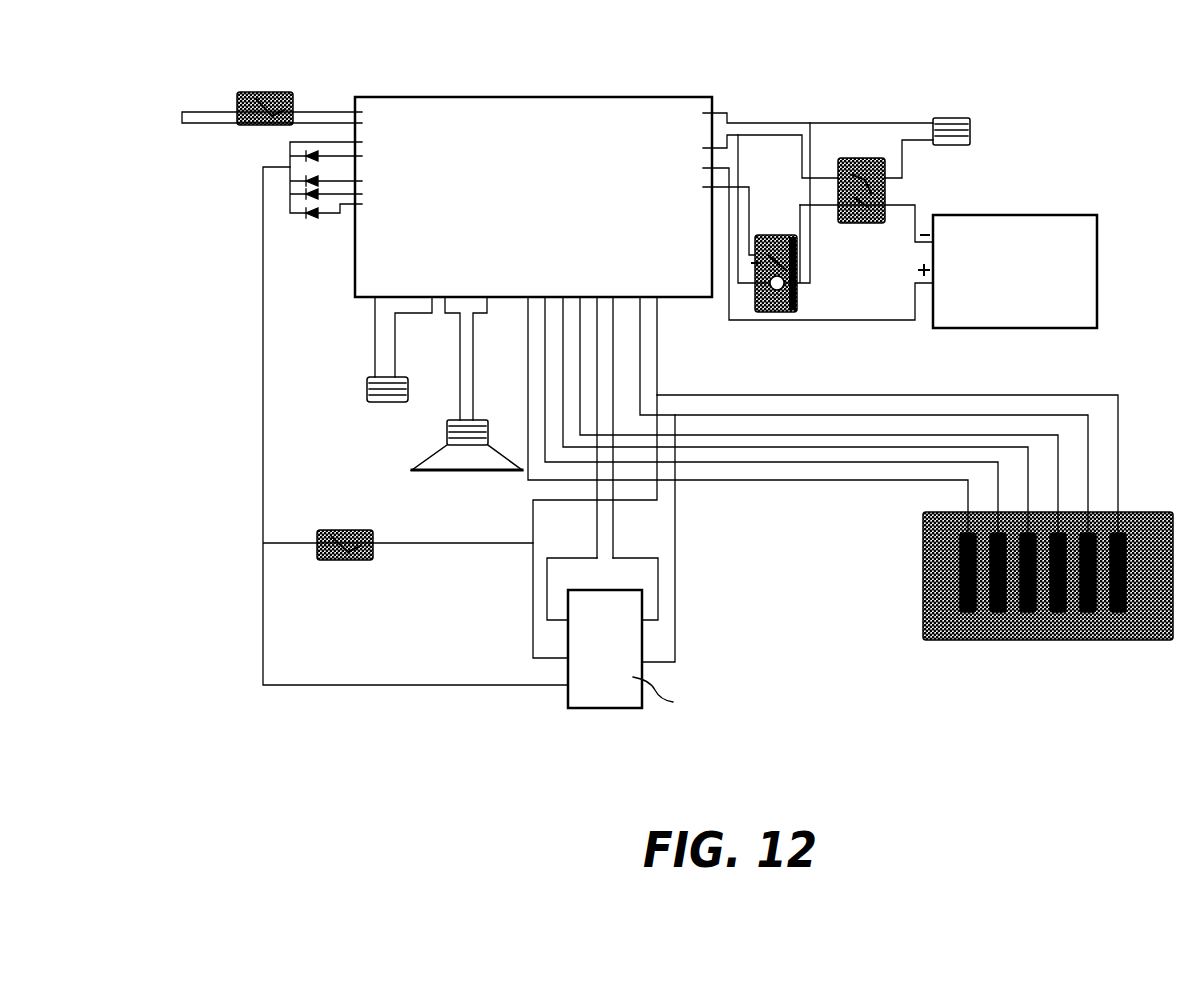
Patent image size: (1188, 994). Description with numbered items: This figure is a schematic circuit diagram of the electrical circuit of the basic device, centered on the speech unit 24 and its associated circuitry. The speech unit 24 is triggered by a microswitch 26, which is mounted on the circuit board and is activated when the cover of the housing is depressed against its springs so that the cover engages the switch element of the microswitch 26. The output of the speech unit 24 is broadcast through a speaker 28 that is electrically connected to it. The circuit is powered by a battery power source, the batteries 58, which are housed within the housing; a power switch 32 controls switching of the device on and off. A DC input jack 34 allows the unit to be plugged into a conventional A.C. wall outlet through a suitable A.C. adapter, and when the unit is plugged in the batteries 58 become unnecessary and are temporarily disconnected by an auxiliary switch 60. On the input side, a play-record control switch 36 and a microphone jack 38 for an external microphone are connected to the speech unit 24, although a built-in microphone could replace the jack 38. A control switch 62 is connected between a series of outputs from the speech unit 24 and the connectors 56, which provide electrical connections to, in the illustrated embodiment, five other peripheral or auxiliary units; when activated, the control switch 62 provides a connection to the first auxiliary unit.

The speech unit 24 is at (573, 108).
The microswitch 26 is at (613, 700).
The speaker 28 is at (448, 463).
The power switch 32 is at (865, 158).
The DC input jack 34 is at (962, 115).
The play-record control switch 36 is at (270, 93).
The microphone jack 38 is at (362, 400).
The connectors 56 is at (942, 615).
The batteries 58 is at (1070, 220).
The auxiliary switch 60 is at (785, 312).
The control switch 62 is at (360, 560).